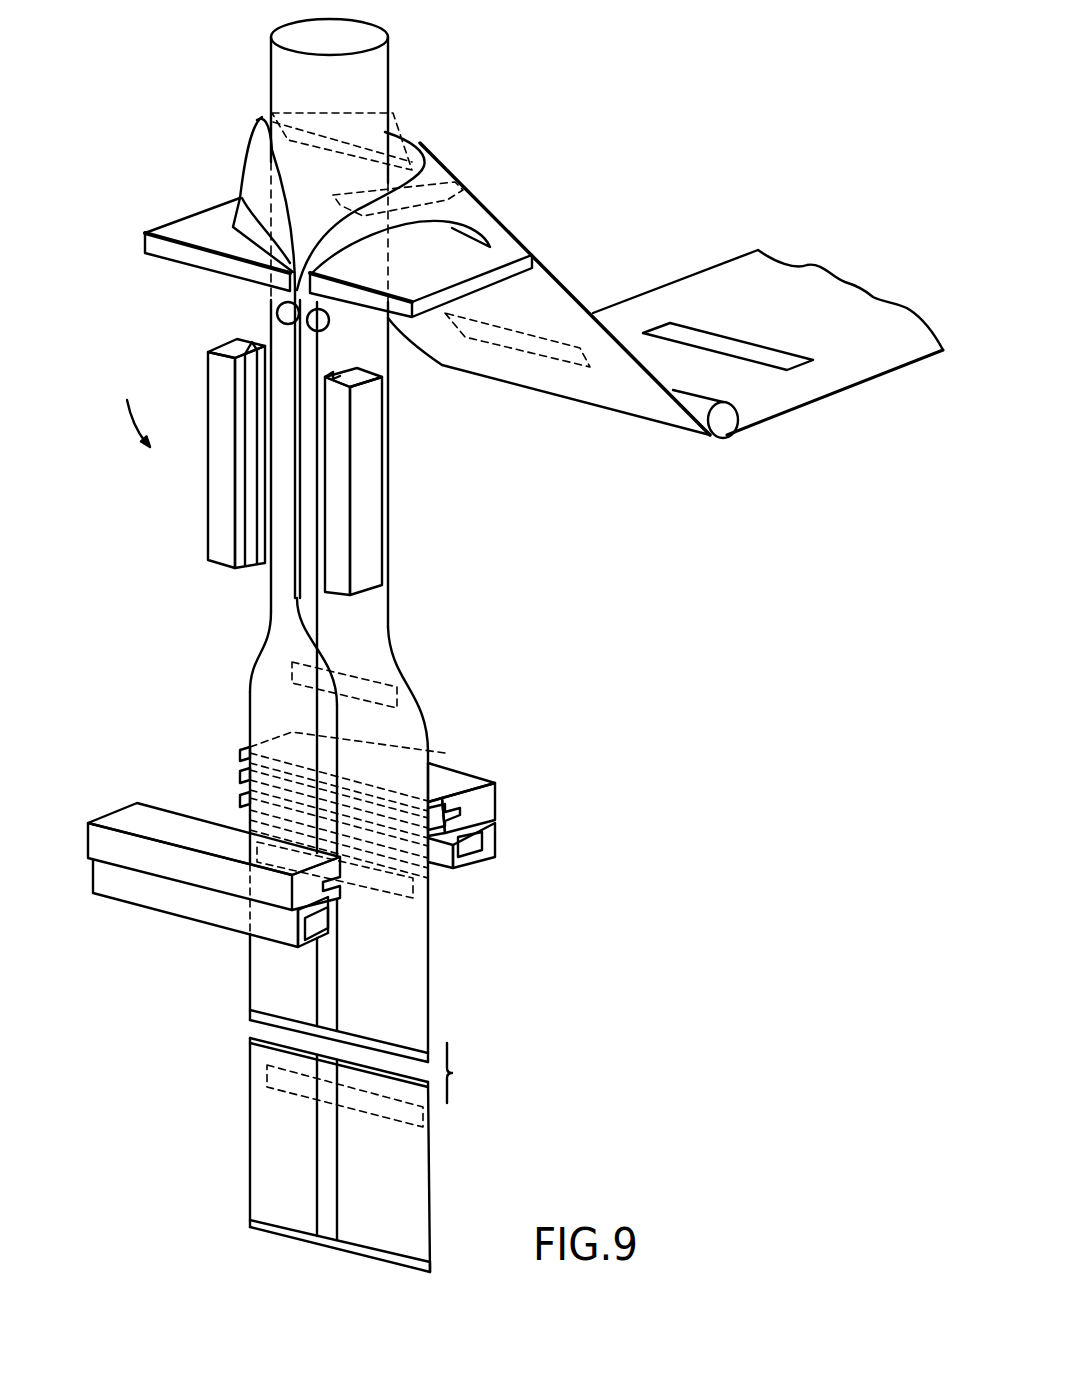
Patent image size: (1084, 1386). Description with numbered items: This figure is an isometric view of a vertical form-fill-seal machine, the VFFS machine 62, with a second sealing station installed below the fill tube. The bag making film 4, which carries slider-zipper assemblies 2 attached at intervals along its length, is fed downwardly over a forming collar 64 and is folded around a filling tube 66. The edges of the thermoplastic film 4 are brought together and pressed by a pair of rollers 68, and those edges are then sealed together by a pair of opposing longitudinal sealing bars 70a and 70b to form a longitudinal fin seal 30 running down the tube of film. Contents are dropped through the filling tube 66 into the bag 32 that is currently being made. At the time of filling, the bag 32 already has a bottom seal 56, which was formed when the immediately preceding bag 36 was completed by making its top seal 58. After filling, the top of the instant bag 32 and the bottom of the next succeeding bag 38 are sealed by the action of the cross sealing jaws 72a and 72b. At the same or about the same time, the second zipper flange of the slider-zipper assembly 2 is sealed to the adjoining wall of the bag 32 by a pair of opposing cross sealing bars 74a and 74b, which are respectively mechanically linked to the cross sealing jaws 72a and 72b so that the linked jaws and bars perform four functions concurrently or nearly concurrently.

The slider-zipper assemblies 2 is at (375, 125).
The bag making film 4 is at (262, 117).
The longitudinal fin seal 30 is at (297, 592).
The bag 32 is at (430, 1007).
The immediately preceding bag 36 is at (432, 1223).
The next succeeding bag 38 is at (413, 682).
The bottom seal 56 is at (258, 1015).
The top seal 58 is at (252, 1037).
The VFFS machine 62 is at (131, 410).
The forming collar 64 is at (190, 222).
The filling tube 66 is at (390, 75).
The pair of rollers 68 is at (277, 312).
The longitudinal sealing bar 70a is at (208, 512).
The longitudinal sealing bar 70b is at (375, 518).
The cross sealing jaw 72a is at (137, 805).
The cross sealing jaw 72b is at (497, 795).
The cross sealing bar 74a is at (158, 912).
The cross sealing bar 74b is at (482, 863).